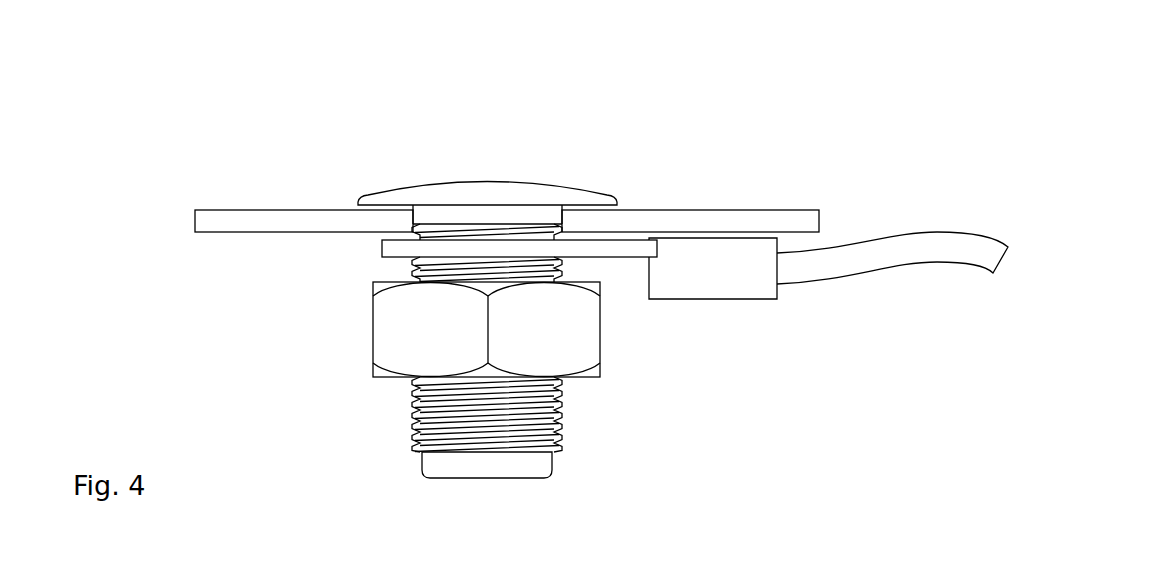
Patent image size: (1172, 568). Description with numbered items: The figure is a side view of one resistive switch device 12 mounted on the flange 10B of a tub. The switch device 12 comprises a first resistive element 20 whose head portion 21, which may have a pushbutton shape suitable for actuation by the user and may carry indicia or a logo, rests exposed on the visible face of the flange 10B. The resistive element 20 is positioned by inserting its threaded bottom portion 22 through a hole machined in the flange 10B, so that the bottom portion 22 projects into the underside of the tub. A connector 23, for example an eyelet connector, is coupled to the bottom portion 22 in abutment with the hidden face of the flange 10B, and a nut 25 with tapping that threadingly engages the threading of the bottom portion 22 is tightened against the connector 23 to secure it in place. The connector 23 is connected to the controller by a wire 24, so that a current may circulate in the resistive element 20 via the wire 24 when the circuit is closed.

The flange 10B is at (246, 211).
The resistive switch device 12 is at (971, 318).
The first resistive element 20 is at (555, 167).
The head portion 21 is at (430, 190).
The bottom portion 22 is at (542, 457).
The connector 23 is at (381, 248).
The wire 24 is at (837, 250).
The nut 25 is at (395, 334).